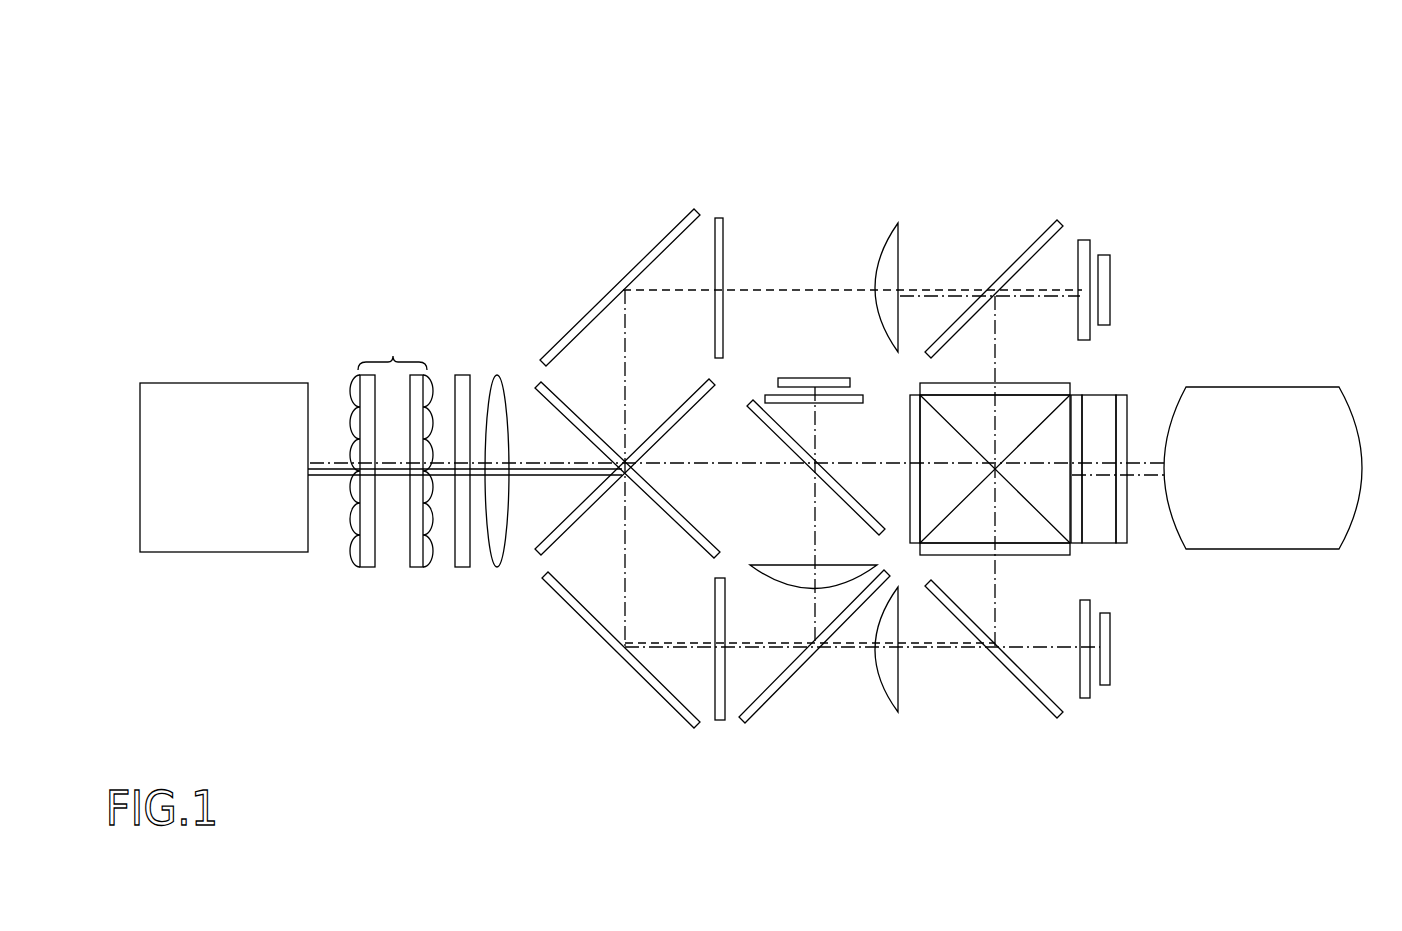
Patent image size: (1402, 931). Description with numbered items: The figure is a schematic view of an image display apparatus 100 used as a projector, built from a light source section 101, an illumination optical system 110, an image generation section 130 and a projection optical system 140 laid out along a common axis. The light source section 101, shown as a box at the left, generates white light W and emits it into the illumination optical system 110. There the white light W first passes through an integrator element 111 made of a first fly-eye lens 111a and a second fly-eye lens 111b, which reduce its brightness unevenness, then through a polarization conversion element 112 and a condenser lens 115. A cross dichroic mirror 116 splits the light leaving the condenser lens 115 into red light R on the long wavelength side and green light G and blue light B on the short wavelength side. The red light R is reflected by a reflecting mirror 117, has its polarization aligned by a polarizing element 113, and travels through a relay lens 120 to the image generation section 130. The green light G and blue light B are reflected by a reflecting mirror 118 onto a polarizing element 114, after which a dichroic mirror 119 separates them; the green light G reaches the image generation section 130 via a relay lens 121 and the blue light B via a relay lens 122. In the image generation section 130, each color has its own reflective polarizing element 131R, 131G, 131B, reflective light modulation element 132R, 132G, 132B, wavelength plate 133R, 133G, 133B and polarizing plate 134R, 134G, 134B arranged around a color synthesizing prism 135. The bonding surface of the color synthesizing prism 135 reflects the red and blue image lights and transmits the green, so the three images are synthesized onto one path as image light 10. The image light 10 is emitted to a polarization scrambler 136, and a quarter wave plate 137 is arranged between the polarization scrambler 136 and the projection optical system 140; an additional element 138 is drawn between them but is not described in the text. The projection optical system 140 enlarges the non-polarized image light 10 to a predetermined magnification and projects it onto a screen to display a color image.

The image display apparatus 100 is at (628, 132).
The illumination optical system 110 is at (530, 235).
The image generation section 130 is at (1098, 215).
The image light 10 is at (1147, 460).
The white light W is at (325, 458).
The light source section 101 is at (222, 383).
The integrator element 111 is at (392, 348).
The first fly-eye lens 111a is at (368, 567).
The second fly-eye lens 111b is at (415, 567).
The polarization conversion element 112 is at (462, 375).
The condenser lens 115 is at (498, 378).
The reflecting mirror 117 is at (657, 236).
The polarizing element 113 is at (718, 218).
The cross dichroic mirror 116 is at (672, 382).
The reflecting mirror 118 is at (565, 605).
The polarizing element 114 is at (722, 720).
The dichroic mirror 119 is at (785, 700).
The relay lens 121 is at (762, 587).
The relay lens 120 is at (898, 228).
The relay lens 122 is at (896, 712).
The red light R is at (797, 290).
The green light G is at (812, 520).
The blue light B is at (848, 650).
The reflective polarizing element 131G is at (790, 446).
The wavelength plate 133G is at (766, 395).
The reflective light modulation element 132G is at (820, 378).
The polarizing plate 134G is at (910, 398).
The reflective polarizing element 131R is at (1030, 245).
The wavelength plate 133R is at (1092, 253).
The reflective light modulation element 132R is at (1112, 277).
The polarizing plate 134R is at (1035, 383).
The color synthesizing prism 135 is at (1073, 405).
The polarizing plate 134B is at (1033, 556).
The polarization scrambler 136 is at (1080, 545).
The optical element 138 is at (1100, 548).
The ¼ wave plate 137 is at (1127, 545).
The reflective polarizing element 131B is at (1020, 686).
The wavelength plate 133B is at (1090, 698).
The reflective light modulation element 132B is at (1112, 672).
The projection optical system 140 is at (1262, 387).